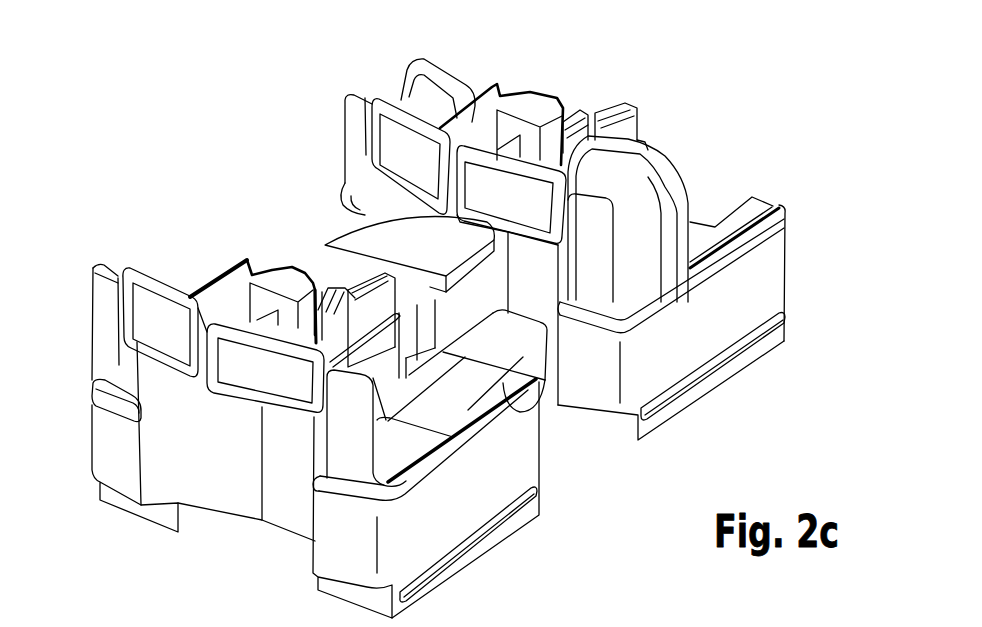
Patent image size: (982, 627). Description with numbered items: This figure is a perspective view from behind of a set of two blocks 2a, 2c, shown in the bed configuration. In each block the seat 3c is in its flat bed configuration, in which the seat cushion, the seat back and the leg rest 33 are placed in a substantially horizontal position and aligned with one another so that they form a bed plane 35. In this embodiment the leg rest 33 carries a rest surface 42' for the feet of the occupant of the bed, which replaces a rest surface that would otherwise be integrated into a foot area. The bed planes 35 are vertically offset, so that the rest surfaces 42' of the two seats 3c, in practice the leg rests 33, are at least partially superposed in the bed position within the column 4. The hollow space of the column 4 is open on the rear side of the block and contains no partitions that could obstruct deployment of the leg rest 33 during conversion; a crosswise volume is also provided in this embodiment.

The block 2a is at (753, 385).
The block 2c is at (492, 582).
The seat 3c is at (206, 244).
The column 4 is at (272, 270).
The leg rest 33 is at (423, 235).
The bed plane 35 is at (380, 263).
The rest surface 42' is at (464, 304).